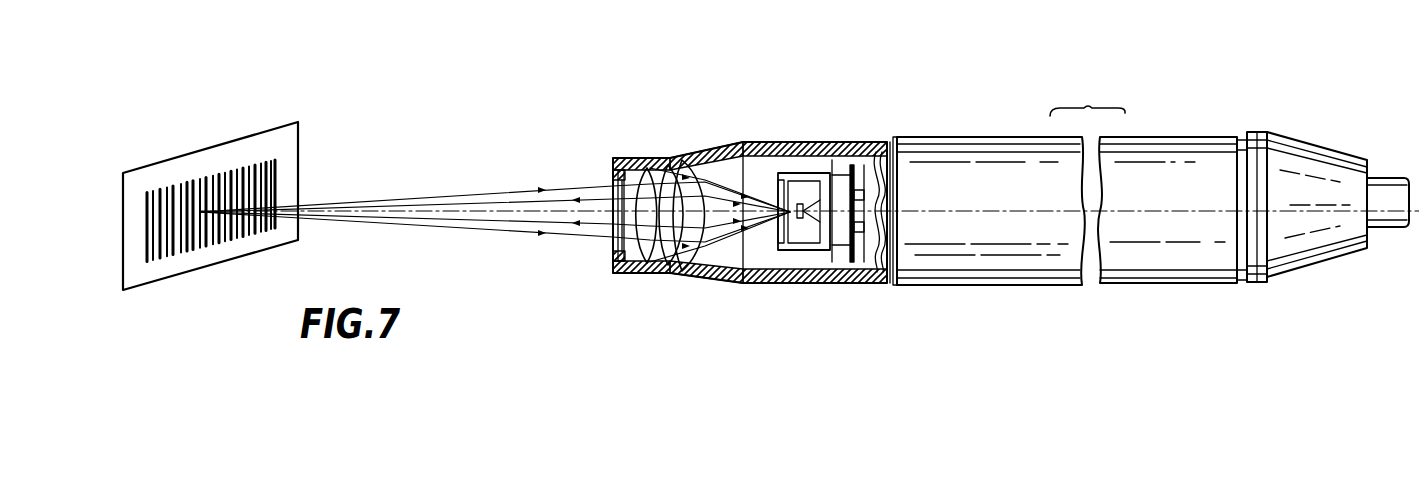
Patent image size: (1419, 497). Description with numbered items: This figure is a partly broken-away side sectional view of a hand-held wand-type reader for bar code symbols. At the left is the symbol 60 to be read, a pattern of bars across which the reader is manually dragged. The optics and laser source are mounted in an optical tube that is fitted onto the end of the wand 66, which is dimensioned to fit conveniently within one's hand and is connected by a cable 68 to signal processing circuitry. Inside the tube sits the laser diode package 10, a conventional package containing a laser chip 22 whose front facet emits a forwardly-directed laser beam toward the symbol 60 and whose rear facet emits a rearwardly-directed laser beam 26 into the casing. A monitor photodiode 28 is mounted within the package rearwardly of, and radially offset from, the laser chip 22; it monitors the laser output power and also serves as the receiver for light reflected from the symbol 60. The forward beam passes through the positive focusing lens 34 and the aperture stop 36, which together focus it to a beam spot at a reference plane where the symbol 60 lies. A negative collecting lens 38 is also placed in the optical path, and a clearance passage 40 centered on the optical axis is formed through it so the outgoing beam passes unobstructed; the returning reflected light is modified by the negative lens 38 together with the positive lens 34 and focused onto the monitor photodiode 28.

The symbol 60 is at (294, 130).
The clearance passage 40 is at (618, 222).
The negative collecting lens 38 is at (648, 175).
The aperture stop 36 is at (667, 162).
The positive focusing lens 34 is at (693, 170).
The laser diode package 10 is at (797, 175).
The laser chip 22 is at (800, 218).
The monitor photodiode 28 is at (836, 185).
The rearwardly-directed laser beam 26 is at (840, 270).
The wand 66 is at (1203, 124).
The cable 68 is at (1389, 178).